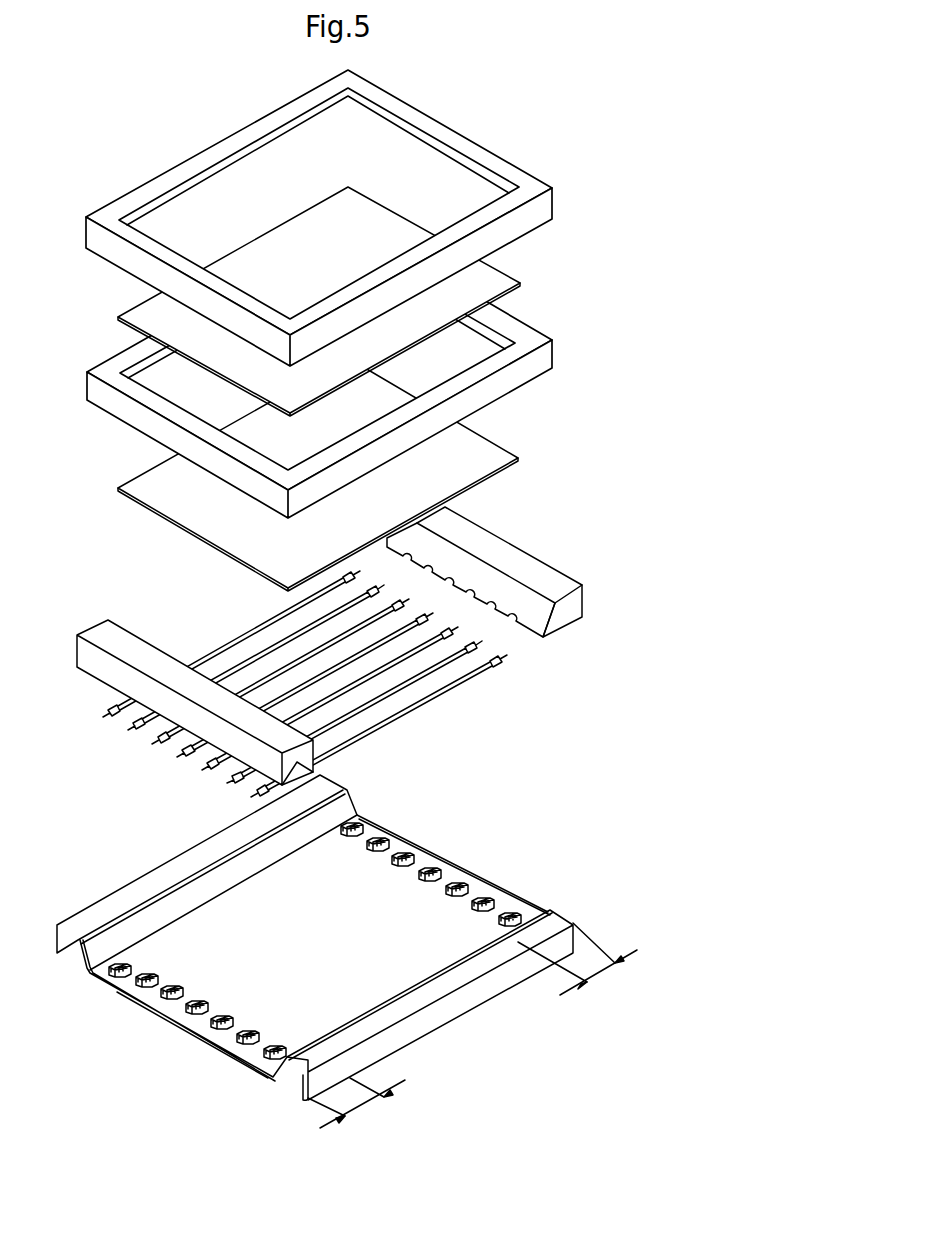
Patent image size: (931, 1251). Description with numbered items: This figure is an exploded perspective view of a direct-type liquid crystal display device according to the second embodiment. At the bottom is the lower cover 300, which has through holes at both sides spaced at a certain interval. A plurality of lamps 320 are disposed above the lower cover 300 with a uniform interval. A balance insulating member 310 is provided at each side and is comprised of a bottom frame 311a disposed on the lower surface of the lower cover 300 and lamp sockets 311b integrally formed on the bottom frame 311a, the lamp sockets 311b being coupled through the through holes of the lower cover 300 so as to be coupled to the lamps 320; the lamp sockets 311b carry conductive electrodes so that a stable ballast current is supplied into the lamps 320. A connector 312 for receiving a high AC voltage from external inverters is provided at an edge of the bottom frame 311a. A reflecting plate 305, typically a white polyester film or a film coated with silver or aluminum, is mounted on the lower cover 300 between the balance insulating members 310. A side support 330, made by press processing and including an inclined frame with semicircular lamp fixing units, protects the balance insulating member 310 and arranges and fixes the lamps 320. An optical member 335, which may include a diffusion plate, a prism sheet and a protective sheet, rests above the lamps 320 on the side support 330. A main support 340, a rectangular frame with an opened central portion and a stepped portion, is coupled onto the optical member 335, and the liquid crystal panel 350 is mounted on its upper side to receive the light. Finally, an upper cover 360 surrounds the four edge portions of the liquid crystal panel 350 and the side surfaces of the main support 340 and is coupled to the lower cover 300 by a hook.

The lower cover 300 is at (445, 1016).
The reflecting plate 305 is at (207, 918).
The balance insulating member 310 is at (315, 963).
The bottom frame 311a is at (237, 1062).
The lamp sockets 311b is at (197, 1023).
The connector 312 is at (315, 941).
The lamps 320 is at (505, 660).
The side support 330 is at (513, 557).
The optical member 335 is at (492, 453).
The main support 340 is at (545, 362).
The liquid crystal panel 350 is at (503, 282).
The upper cover 360 is at (450, 132).